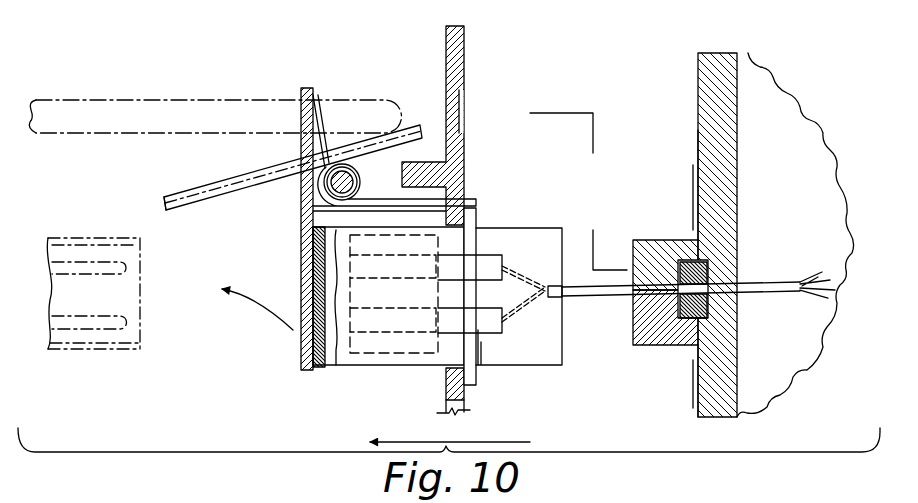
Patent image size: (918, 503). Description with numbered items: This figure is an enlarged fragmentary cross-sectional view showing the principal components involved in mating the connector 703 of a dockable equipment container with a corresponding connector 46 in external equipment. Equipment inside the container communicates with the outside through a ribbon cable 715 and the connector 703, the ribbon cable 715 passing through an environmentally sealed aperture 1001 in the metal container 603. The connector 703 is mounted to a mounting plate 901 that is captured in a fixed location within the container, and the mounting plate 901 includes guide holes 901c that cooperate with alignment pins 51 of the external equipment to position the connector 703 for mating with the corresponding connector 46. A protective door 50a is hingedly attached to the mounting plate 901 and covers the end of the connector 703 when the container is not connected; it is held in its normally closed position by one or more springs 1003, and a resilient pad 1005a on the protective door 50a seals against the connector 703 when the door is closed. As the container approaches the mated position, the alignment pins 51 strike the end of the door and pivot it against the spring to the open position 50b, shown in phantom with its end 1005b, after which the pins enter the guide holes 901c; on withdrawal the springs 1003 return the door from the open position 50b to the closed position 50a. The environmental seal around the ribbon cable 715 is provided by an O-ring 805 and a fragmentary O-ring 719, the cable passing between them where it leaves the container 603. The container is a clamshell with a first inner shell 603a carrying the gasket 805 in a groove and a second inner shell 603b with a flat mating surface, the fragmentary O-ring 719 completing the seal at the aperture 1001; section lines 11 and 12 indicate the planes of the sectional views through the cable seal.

The corresponding connector 46 is at (79, 350).
The alignment pins 51 is at (127, 98).
The section line 11 is at (258, 110).
The protective door open position 50b is at (203, 184).
The strip end 1005b is at (162, 212).
The protective door 50a is at (298, 360).
The springs 1003 is at (301, 213).
The mounting plate 901 is at (466, 40).
The guide holes 901c is at (452, 103).
The connector 703 is at (517, 228).
The resilient pad 1005a is at (322, 373).
The ribbon cable 715 is at (578, 290).
The metal container 603 is at (695, 113).
The first inner shell 603a is at (698, 152).
The second inner shell 603b is at (697, 413).
The section line 12 is at (696, 181).
The O-ring 805 is at (690, 330).
The fragmentary O-ring 719 is at (690, 262).
The aperture 1001 is at (630, 296).